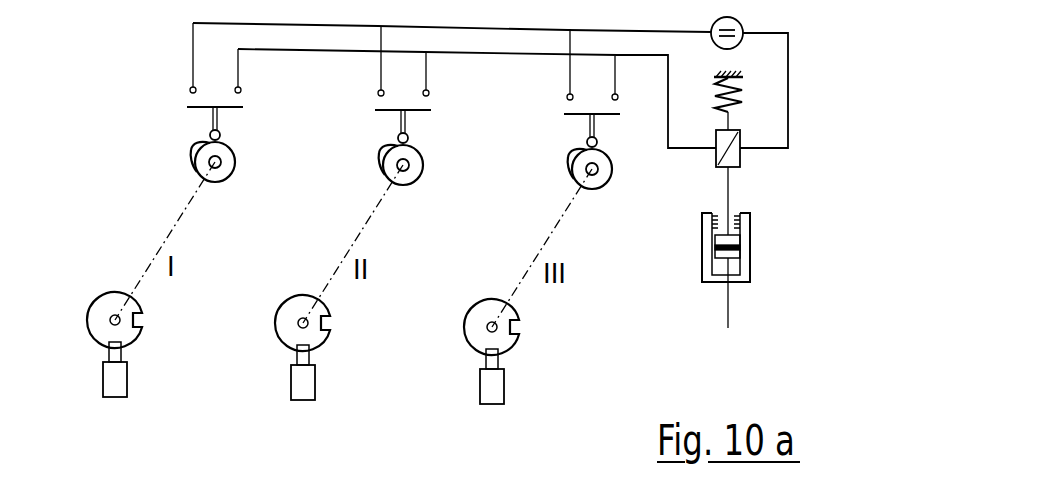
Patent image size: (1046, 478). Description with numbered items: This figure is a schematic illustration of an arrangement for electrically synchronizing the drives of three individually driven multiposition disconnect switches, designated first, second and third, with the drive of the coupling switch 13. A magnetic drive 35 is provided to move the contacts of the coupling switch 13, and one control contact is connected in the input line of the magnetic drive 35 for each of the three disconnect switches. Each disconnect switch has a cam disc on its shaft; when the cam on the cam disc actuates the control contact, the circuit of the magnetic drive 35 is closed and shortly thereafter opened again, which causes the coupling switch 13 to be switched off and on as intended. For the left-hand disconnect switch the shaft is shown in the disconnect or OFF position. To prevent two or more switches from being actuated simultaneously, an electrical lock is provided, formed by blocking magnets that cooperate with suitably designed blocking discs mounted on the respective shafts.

The coupling switch 13 is at (749, 247).
The magnetic drive 35 is at (763, 167).